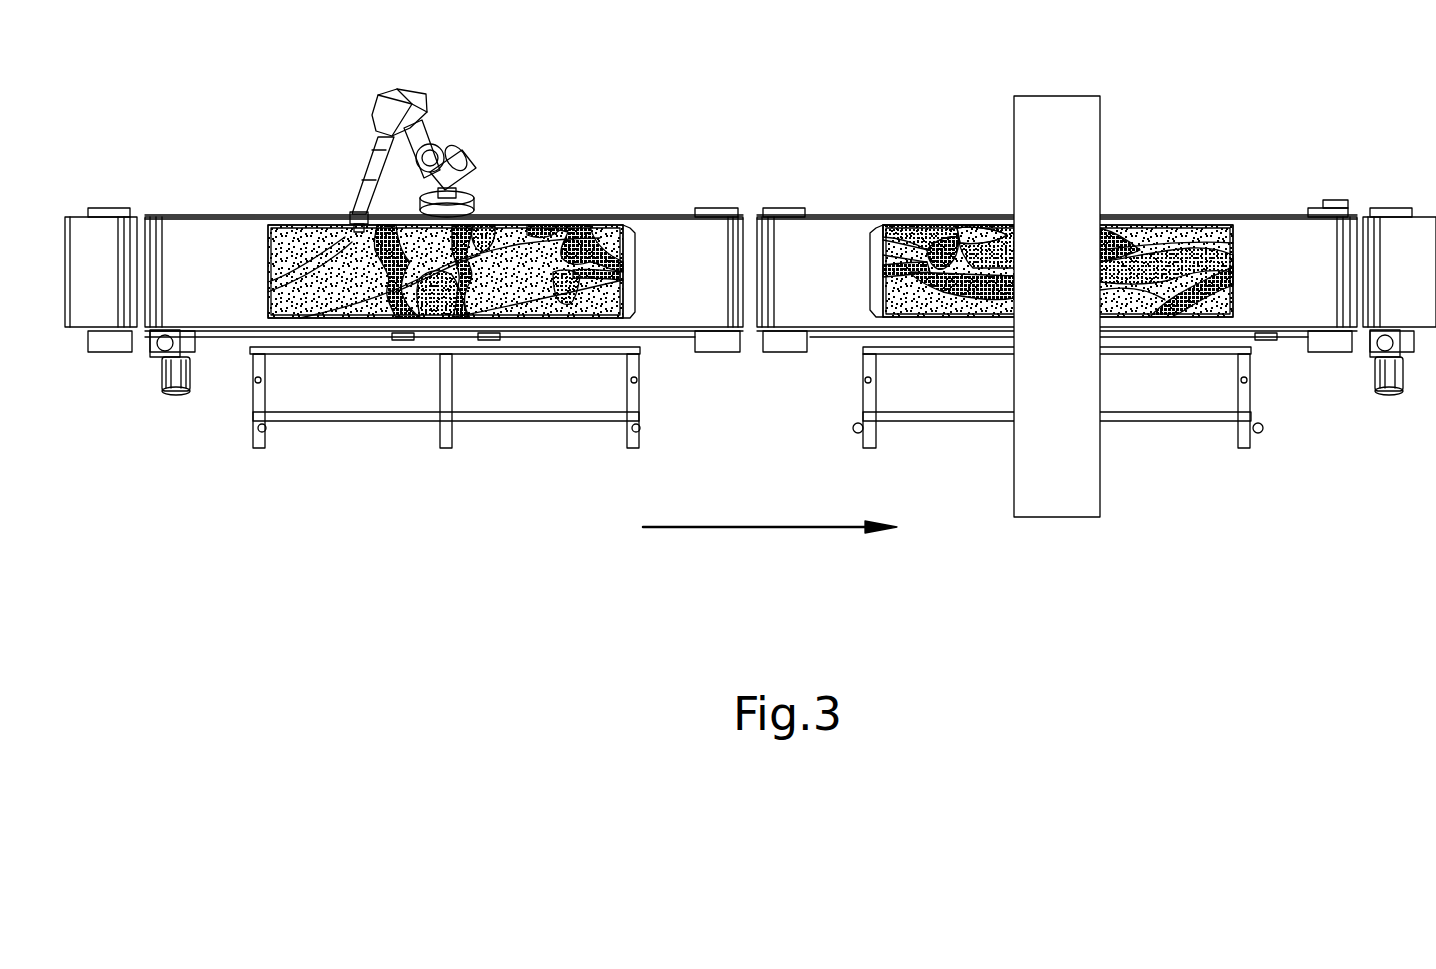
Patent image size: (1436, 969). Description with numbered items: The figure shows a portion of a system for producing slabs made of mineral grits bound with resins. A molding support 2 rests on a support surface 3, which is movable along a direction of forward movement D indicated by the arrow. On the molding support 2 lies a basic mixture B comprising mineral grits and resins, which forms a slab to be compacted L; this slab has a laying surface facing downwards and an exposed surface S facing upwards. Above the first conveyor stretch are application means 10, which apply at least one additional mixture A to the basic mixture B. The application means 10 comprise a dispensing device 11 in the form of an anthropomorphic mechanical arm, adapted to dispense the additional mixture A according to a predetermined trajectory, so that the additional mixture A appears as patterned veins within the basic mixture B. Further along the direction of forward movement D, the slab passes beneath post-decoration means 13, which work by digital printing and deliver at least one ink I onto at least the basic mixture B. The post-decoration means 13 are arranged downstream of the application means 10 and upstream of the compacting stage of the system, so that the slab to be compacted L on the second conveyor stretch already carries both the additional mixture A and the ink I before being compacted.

The molding support 2 is at (772, 316).
The support surface 3 is at (212, 287).
The application means 10 is at (452, 135).
The dispensing device 11 is at (385, 115).
The post-decoration means 13 is at (1090, 126).
The exposed surface S is at (704, 316).
The ink I is at (548, 238).
The additional mixture A is at (565, 285).
The basic mixture B is at (342, 285).
The slab to be compacted L is at (1136, 310).
The direction of forward movement D is at (738, 529).